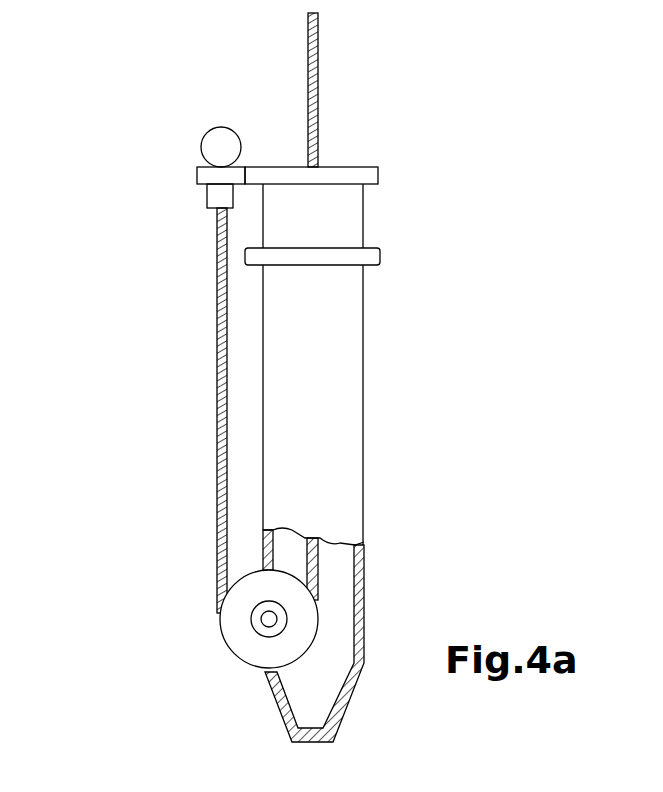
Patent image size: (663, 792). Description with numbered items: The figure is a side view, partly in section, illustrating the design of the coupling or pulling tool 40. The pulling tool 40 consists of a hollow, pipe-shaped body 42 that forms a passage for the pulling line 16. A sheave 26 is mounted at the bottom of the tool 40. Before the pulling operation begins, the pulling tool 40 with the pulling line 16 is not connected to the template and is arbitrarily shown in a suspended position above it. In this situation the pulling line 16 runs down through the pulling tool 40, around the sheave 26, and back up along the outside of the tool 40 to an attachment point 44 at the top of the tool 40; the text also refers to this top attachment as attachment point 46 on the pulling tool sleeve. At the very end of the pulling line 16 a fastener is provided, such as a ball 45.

The pulling line 16 is at (318, 95).
The sheave 26 is at (233, 621).
The pulling tool 40 is at (370, 396).
The pipeshaped body 42 is at (337, 474).
The attachment point 44 is at (197, 170).
The ball 45 is at (215, 140).
The attachment point 46 is at (280, 167).